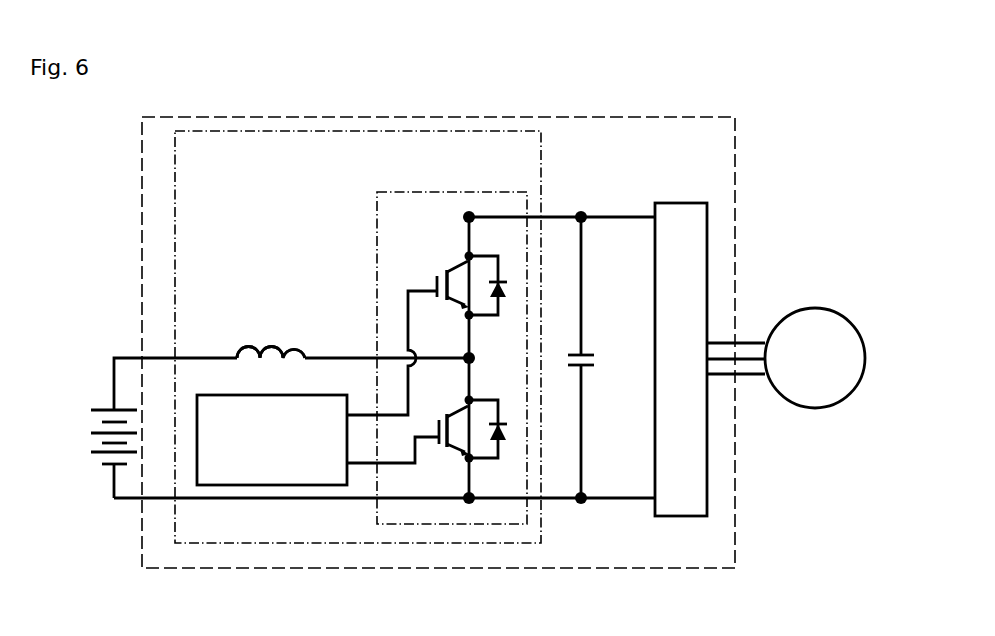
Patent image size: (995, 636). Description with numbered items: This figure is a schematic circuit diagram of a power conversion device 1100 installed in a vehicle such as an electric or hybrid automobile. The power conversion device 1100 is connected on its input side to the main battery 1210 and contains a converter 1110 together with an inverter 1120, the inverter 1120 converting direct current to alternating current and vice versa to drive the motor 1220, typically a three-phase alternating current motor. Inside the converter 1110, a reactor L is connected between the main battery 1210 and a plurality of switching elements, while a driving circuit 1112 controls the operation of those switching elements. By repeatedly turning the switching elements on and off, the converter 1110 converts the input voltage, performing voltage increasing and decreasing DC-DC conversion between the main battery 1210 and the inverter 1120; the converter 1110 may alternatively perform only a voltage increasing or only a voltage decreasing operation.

The power conversion device 1100 is at (142, 281).
The converter 1110 is at (541, 190).
The driving circuit 1112 is at (250, 487).
The inverter 1120 is at (707, 245).
The main battery 1210 is at (100, 460).
The motor 1220 is at (812, 408).
The reactor L is at (272, 344).